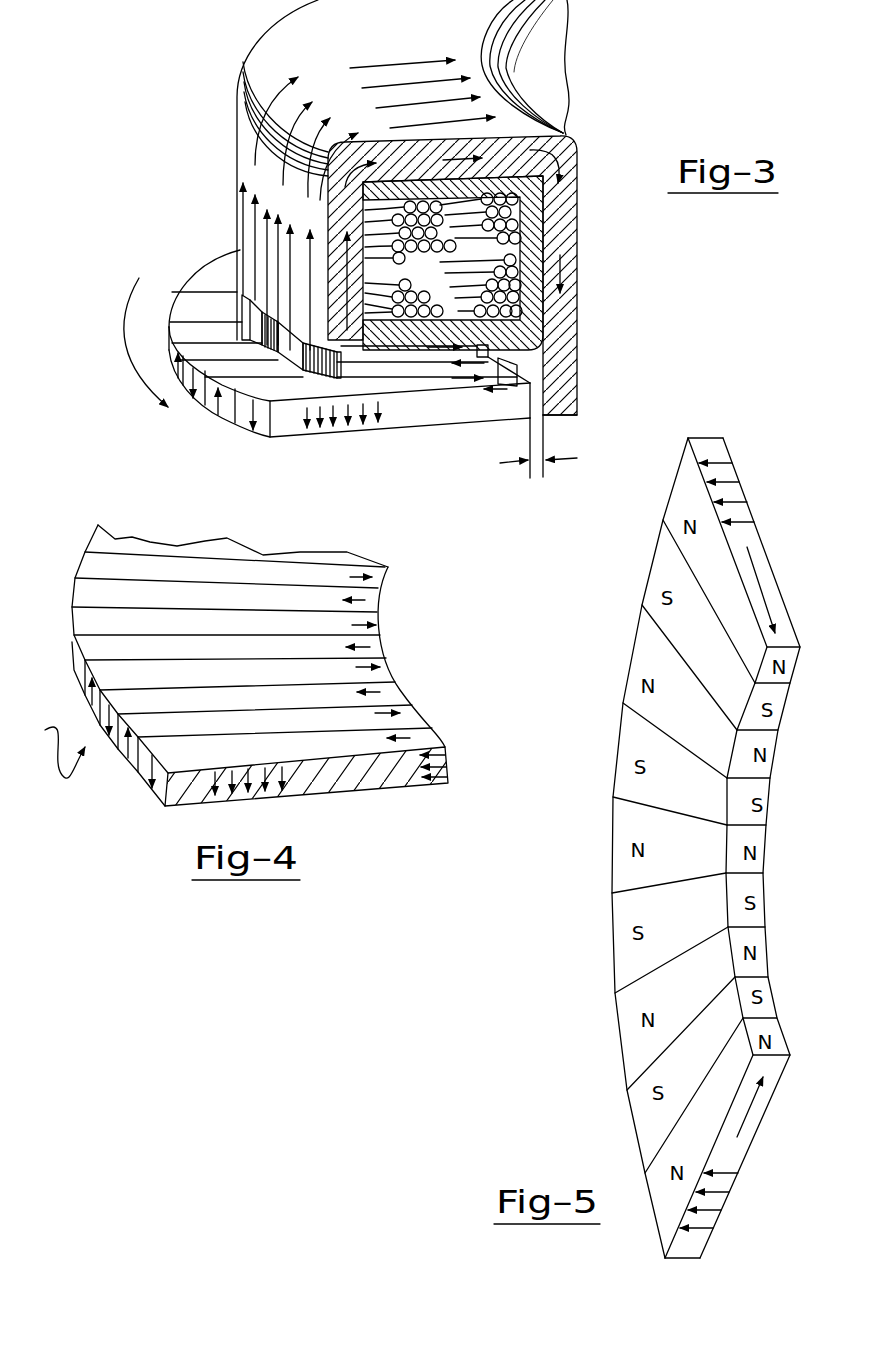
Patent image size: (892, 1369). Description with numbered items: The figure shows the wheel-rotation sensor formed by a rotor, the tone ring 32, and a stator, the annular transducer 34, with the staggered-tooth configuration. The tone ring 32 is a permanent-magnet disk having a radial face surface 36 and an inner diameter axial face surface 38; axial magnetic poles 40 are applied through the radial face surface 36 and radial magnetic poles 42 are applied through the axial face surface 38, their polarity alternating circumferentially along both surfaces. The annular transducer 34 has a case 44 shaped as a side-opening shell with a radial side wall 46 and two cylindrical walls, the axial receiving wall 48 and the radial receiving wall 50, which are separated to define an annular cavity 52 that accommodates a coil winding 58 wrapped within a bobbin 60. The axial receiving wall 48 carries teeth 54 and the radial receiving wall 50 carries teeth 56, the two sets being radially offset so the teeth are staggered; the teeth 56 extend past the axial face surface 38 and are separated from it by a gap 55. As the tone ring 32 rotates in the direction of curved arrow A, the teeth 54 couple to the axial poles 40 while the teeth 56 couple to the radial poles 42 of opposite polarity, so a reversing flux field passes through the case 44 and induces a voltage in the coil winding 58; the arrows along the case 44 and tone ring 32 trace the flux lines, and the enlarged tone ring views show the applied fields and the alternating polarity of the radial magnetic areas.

In FIG. 3, the tone ring 32 is at (205, 248).
In FIG. 4, the tone ring 32 is at (49, 752).
In FIG. 3, the annular transducer 34 is at (582, 232).
In FIG. 4, the radial face surface 36 is at (88, 595).
In FIG. 4, the inner diameter axial face surface 38 is at (449, 764).
In FIG. 4, the axial magnetic poles 40 is at (130, 770).
In FIG. 4, the radial magnetic poles 42 is at (398, 707).
In FIG. 3, the case 44 is at (543, 70).
In FIG. 3, the radial side wall 46 is at (383, 147).
In FIG. 3, the axial receiving wall 48 is at (343, 343).
In FIG. 3, the radial receiving wall 50 is at (563, 310).
In FIG. 3, the annular cavity 52 is at (463, 240).
In FIG. 3, the teeth 54 is at (253, 348).
In FIG. 3, the gap 55 is at (537, 473).
In FIG. 3, the teeth 56 is at (565, 418).
In FIG. 3, the coil winding 58 is at (365, 225).
In FIG. 3, the bobbin 60 is at (528, 328).
In FIG. 3, the curved arrow A is at (133, 342).